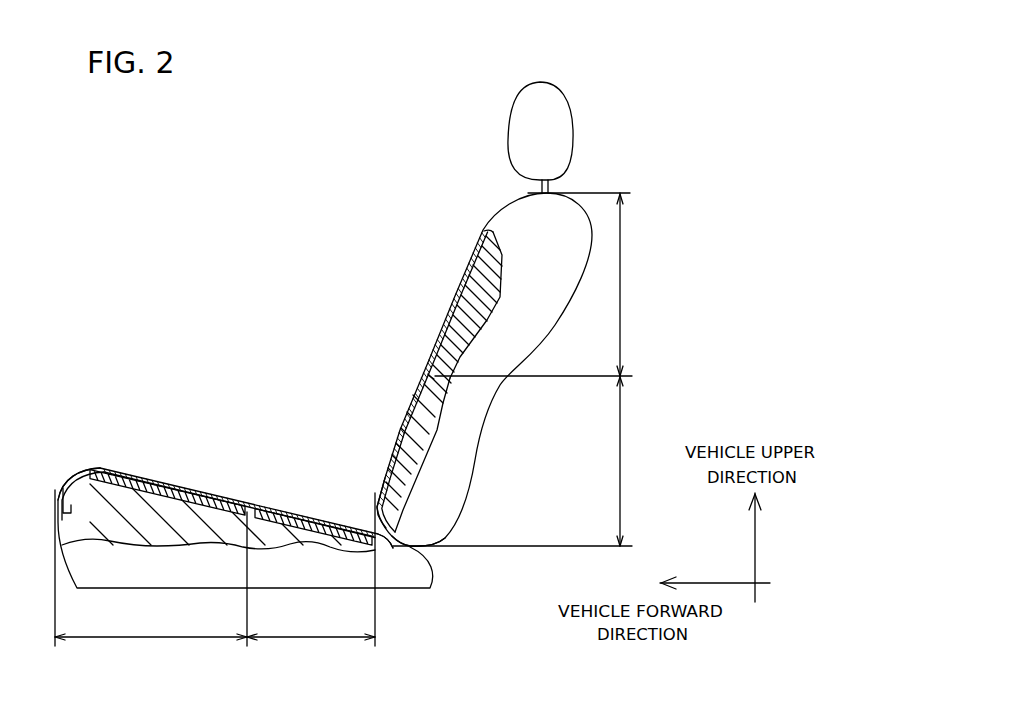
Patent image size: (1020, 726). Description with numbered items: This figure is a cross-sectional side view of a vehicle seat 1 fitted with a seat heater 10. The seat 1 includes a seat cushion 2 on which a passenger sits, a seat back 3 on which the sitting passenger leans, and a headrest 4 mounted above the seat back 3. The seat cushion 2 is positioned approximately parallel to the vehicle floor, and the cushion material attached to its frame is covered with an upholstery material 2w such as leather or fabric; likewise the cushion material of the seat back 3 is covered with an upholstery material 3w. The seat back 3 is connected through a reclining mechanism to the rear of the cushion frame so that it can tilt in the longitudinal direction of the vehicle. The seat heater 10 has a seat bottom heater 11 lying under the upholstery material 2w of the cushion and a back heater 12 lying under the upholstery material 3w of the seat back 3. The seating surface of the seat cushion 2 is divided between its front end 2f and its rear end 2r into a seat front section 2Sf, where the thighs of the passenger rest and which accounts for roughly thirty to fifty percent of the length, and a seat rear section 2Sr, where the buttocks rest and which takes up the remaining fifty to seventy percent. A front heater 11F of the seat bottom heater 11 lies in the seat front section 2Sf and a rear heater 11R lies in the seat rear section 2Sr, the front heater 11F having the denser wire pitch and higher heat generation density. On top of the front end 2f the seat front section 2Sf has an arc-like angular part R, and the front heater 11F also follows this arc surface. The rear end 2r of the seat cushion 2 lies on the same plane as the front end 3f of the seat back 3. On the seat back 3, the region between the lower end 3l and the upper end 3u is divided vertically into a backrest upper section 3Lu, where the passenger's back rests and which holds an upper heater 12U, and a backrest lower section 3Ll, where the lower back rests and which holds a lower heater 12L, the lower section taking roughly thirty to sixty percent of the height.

The seat 1 is at (287, 186).
The seat cushion 2 is at (175, 468).
The upholstery material 2w is at (105, 470).
The front end 2f is at (57, 503).
The rear end 2r is at (387, 539).
The arc-like angular part R is at (64, 476).
The seat front section 2Sf is at (151, 568).
The seat rear section 2Sr is at (311, 569).
The seat back 3 is at (442, 272).
The upholstery material 3w is at (490, 233).
The front end 3f is at (373, 506).
The lower end 3l is at (417, 549).
The upper end 3u is at (556, 191).
The backrest upper section 3Lu is at (549, 284).
The backrest lower section 3Ll is at (523, 461).
The headrest 4 is at (563, 130).
The seat heater 10 is at (445, 312).
The seat bottom heater 11 is at (342, 433).
The front heater 11F is at (188, 491).
The rear heater 11R is at (325, 517).
The back heater 12 is at (333, 312).
The upper heater 12U is at (448, 328).
The lower heater 12L is at (421, 405).